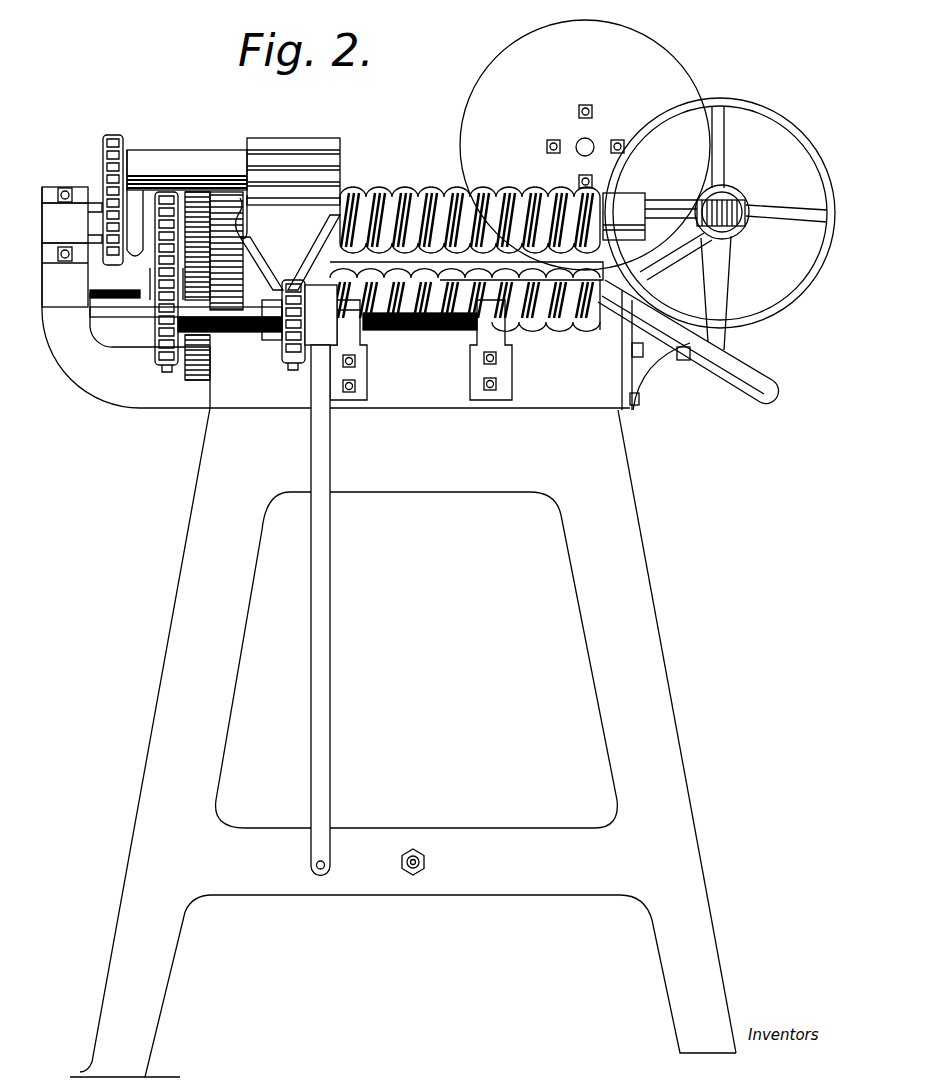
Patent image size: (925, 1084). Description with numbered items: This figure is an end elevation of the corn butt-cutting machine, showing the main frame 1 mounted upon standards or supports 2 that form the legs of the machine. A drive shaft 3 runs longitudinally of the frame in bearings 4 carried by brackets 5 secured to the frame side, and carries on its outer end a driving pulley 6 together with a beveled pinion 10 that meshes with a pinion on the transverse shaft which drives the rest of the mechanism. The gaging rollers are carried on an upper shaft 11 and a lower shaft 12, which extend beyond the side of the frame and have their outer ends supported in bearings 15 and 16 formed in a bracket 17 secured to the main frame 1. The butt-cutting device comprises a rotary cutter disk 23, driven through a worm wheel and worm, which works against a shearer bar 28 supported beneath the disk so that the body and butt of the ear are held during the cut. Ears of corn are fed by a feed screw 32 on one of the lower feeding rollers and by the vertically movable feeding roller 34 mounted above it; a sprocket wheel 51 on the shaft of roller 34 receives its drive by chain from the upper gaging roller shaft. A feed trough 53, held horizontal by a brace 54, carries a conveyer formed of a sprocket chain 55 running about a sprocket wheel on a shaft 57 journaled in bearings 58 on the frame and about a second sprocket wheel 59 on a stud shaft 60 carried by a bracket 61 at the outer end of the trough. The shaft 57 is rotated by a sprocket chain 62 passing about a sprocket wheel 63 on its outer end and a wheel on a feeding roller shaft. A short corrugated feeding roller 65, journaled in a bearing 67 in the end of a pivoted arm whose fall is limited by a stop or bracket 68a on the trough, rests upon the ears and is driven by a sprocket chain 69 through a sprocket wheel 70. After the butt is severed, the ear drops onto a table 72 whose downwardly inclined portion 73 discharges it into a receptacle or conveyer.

The main frame 1 is at (447, 488).
The standards or supports 2 is at (176, 655).
The drive shaft 3 is at (740, 206).
The bearings 4 is at (736, 224).
The brackets 5 is at (668, 268).
The driving pulley 6 is at (770, 324).
The beveled pinion 10 is at (732, 192).
The upper shaft 11 is at (96, 230).
The lower shaft 12 is at (120, 298).
The bearing 15 is at (50, 212).
The bearing 16 is at (80, 296).
The bracket 17 is at (146, 409).
The rotary cutter disk 23 is at (462, 98).
The shearer bar 28 is at (603, 272).
The feed screw 32 is at (592, 330).
The vertically movable feeding roller 34 is at (397, 192).
The sprocket wheel 51 is at (240, 178).
The feed trough 53 is at (338, 213).
The brace 54 is at (333, 546).
The sprocket chain 55 is at (283, 348).
The shaft 57 is at (446, 343).
The bearings 58 is at (350, 322).
The sprocket wheel 59 is at (292, 364).
The stud shaft 60 is at (270, 330).
The bracket 61 is at (308, 392).
The sprocket chain 62 is at (158, 340).
The sprocket wheel 63 is at (170, 360).
The corrugated feeding roller 65 is at (285, 128).
The bearing 67 is at (188, 140).
The stop or bracket 68a is at (247, 262).
The sprocket chain 69 is at (186, 178).
The sprocket wheel 70 is at (104, 150).
The table 72 is at (556, 326).
The downwardly inclined portion 73 is at (740, 386).